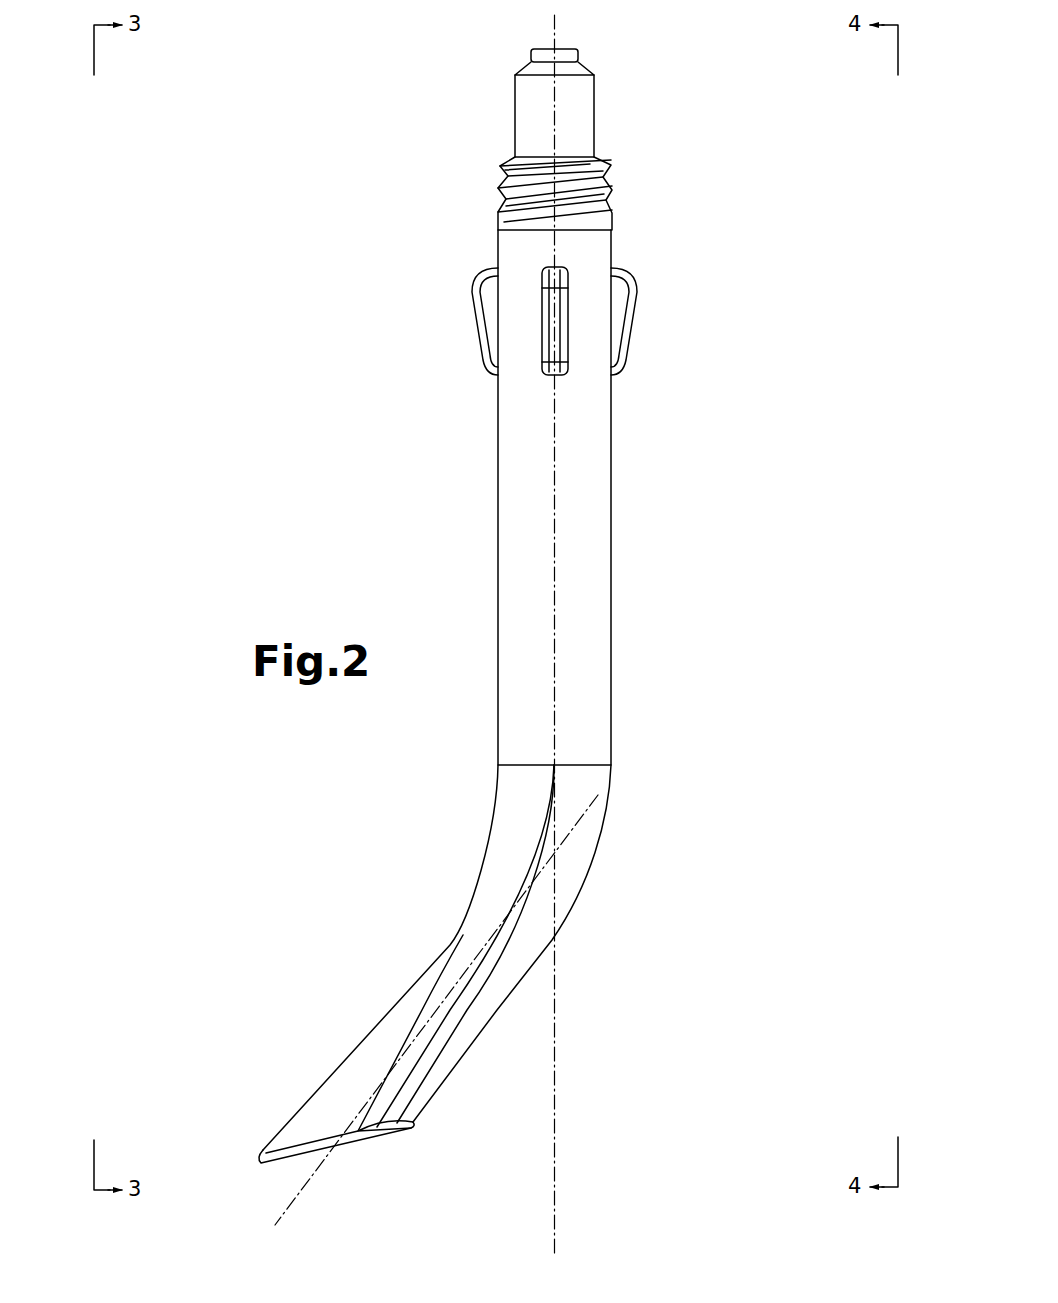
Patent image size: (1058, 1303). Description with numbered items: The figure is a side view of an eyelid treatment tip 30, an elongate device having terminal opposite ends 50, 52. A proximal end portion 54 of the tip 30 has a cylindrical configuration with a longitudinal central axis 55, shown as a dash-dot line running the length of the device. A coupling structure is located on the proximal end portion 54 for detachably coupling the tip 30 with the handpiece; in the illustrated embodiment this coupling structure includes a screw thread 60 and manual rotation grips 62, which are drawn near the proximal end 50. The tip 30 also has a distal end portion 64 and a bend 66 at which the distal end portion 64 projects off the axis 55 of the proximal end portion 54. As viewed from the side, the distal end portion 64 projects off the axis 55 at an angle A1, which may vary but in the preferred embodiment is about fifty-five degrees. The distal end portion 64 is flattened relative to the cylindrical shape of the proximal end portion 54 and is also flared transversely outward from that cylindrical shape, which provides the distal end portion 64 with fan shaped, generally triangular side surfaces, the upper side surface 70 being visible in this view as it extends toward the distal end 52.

The tip 30 is at (401, 372).
The terminal end 50 is at (548, 49).
The terminal end 52 is at (273, 1165).
The proximal end portion 54 is at (498, 473).
The longitudinal central axis 55 is at (553, 572).
The screw thread 60 is at (500, 182).
The manual rotation grips 62 is at (547, 266).
The distal end portion 64 is at (417, 977).
The bend 66 is at (593, 853).
The upper side surface 70 is at (340, 1102).
The angle A1 is at (552, 1247).